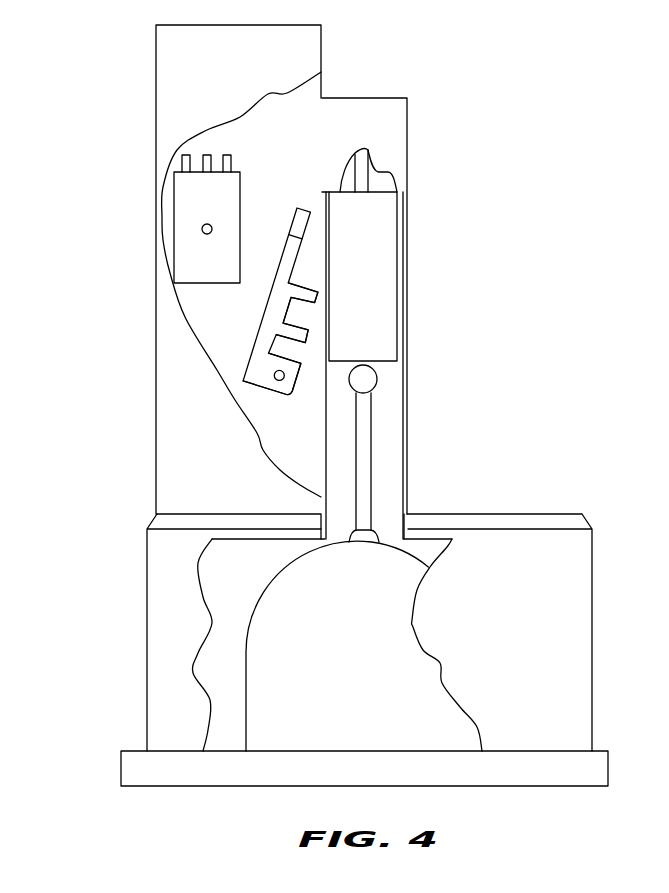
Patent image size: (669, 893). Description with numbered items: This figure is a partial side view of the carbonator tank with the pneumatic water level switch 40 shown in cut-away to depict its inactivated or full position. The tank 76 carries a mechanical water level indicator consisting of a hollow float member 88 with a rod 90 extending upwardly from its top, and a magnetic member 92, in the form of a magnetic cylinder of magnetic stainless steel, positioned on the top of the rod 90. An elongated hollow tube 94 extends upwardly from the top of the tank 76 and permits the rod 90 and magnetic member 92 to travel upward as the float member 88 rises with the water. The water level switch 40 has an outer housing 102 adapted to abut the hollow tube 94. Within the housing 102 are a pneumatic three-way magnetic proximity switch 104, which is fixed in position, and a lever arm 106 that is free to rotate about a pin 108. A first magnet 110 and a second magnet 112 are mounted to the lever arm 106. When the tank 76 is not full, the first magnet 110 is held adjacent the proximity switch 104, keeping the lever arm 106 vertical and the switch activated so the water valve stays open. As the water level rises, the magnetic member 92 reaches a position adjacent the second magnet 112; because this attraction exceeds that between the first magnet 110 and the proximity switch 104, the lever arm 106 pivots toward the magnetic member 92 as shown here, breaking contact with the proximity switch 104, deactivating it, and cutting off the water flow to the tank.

The carbonator tank water level switch 40 is at (388, 52).
The tank 76 is at (567, 562).
The hollow float member 88 is at (369, 668).
The rod 90 is at (362, 413).
The magnetic member 92 is at (367, 230).
The hollow tube 94 is at (385, 117).
The outer housing 102 is at (185, 466).
The pneumatic three-way magnetic proximity switch 104 is at (193, 250).
The lever arm 106 is at (252, 368).
The pin 108 is at (280, 383).
The first magnet 110 is at (295, 228).
The second magnet 112 is at (300, 323).